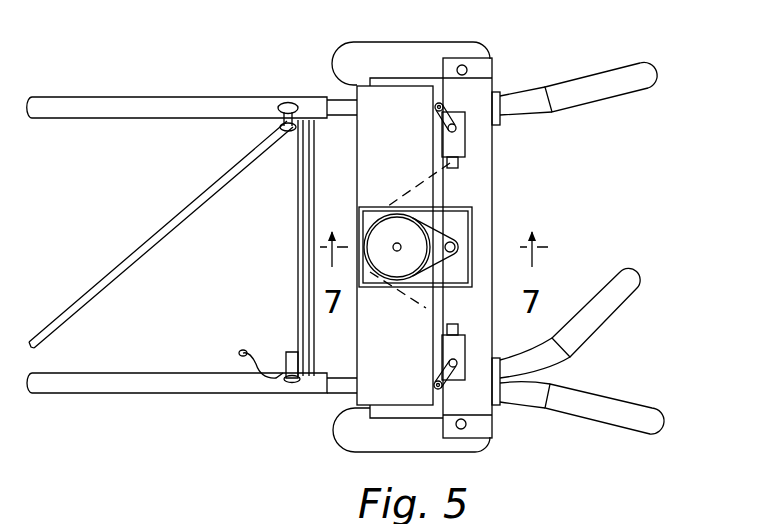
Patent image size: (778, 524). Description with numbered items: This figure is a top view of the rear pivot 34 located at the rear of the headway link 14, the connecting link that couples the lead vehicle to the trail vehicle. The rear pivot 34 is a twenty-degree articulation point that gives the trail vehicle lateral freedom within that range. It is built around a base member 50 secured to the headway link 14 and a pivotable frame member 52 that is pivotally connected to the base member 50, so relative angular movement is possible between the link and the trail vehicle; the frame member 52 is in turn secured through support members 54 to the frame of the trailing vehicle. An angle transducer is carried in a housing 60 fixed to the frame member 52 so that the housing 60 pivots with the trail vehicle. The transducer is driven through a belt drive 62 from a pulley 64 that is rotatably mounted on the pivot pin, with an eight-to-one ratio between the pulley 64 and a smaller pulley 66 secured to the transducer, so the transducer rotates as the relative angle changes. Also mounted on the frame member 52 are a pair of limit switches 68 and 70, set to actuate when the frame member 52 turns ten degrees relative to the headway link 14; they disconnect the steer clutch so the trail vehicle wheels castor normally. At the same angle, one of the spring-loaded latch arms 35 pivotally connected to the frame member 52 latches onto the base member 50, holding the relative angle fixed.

The headway link 14 is at (173, 395).
The rear pivot 34 is at (290, 285).
The latch arms 35 is at (438, 50).
The base member 50 is at (367, 102).
The pivotable frame member 52 is at (480, 182).
The support members 54 is at (620, 90).
The housing 60 is at (465, 222).
The belt drive 62 is at (428, 270).
The pulley 64 is at (397, 268).
The pulley 66 is at (455, 250).
The limit switch 68 is at (478, 343).
The limit switch 70 is at (457, 145).